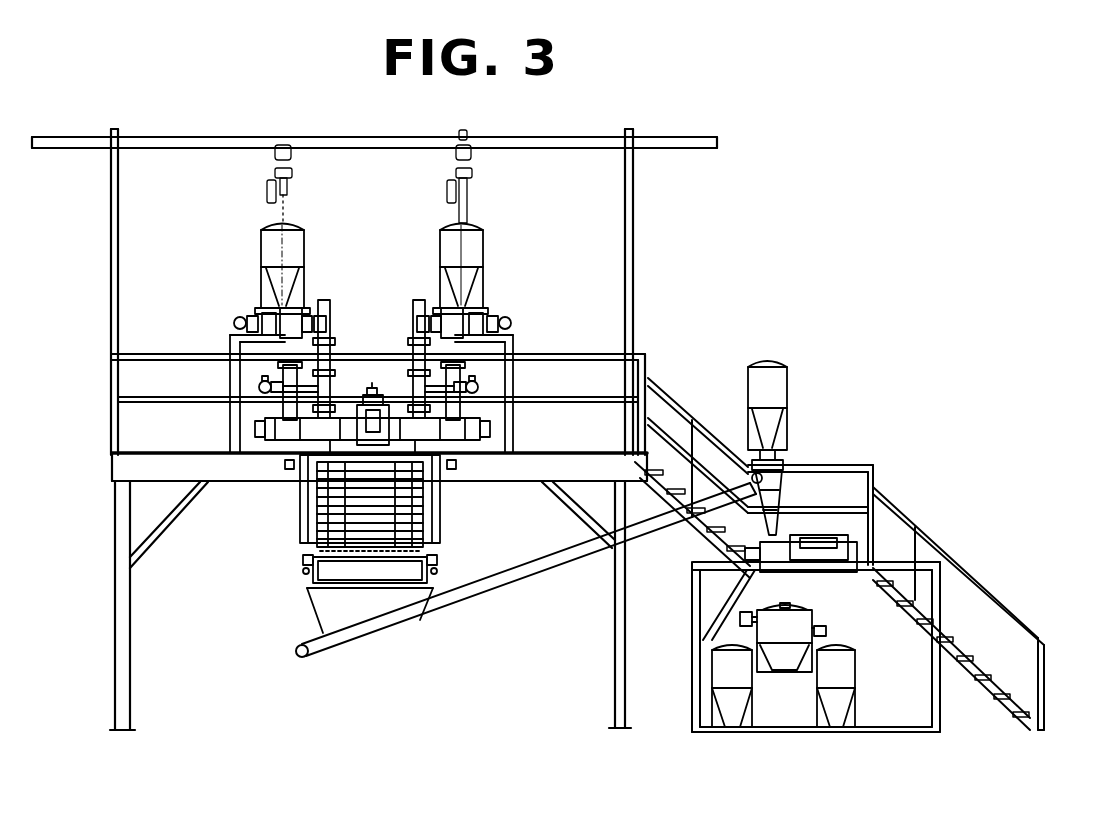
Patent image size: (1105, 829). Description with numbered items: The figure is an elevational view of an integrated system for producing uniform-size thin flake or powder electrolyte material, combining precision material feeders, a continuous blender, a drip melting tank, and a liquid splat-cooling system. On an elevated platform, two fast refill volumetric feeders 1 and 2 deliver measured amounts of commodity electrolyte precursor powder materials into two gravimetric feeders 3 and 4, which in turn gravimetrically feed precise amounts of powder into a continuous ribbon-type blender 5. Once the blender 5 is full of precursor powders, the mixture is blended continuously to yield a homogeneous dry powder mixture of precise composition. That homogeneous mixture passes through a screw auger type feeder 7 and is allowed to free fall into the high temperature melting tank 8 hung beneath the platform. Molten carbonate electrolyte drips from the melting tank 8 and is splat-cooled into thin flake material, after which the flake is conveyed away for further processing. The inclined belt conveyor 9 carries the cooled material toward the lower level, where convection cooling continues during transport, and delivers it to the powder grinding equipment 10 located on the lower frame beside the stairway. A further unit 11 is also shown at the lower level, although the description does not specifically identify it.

The fast refill volumetric feeder 1 is at (233, 321).
The fast refill volumetric feeder 2 is at (512, 318).
The gravimetric feeder 3 is at (258, 386).
The gravimetric feeder 4 is at (480, 386).
The continuous ribbon-type blender 5 is at (366, 400).
The screw auger type feeder 7 is at (332, 438).
The high temperature melting tank 8 is at (305, 513).
The belt conveyor 9 is at (471, 602).
The powder grinding equipment 10 is at (858, 547).
The lower mixer 11 is at (812, 626).